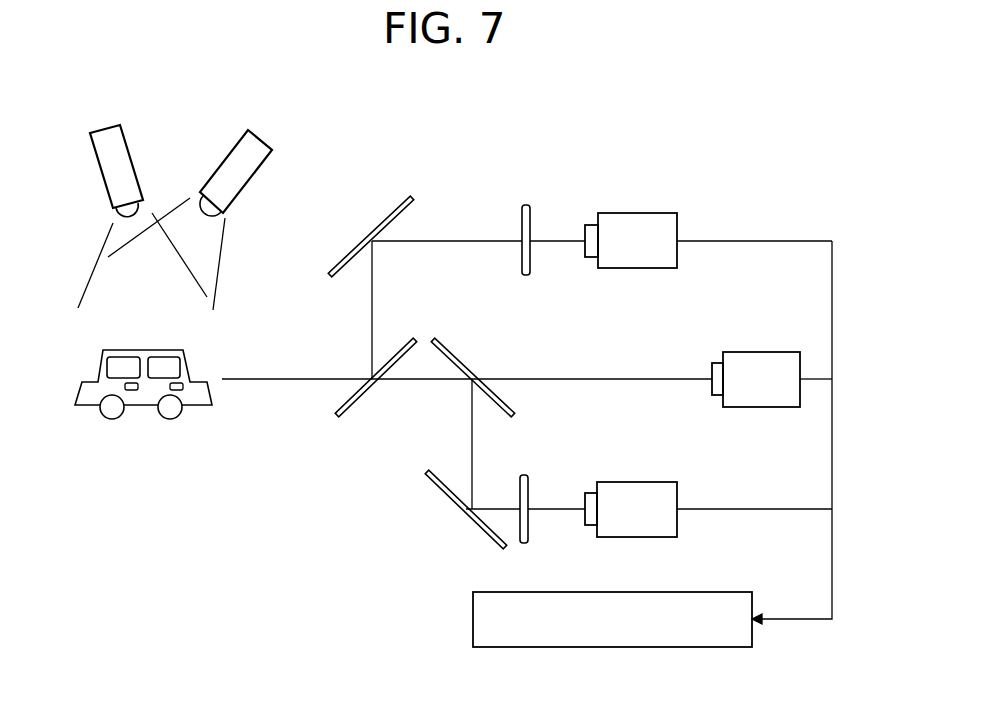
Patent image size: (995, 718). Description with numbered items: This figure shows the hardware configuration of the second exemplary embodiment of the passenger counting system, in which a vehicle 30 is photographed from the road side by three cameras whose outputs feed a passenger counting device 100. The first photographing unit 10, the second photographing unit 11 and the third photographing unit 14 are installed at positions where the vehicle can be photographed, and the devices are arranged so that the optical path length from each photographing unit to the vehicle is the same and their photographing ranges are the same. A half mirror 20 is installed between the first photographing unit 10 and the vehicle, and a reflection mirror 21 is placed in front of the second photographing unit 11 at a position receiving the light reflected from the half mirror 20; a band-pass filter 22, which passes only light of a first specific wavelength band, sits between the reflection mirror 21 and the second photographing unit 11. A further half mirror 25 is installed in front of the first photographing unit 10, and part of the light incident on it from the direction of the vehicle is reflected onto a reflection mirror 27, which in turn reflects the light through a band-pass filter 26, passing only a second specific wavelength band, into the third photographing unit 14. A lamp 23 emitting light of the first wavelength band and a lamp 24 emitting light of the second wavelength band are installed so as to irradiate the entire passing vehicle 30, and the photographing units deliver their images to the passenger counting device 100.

The first photographing unit 10 is at (777, 351).
The second photographing unit 11 is at (660, 213).
The third photographing unit 14 is at (658, 482).
The half mirror 20 is at (527, 205).
The reflection mirror 21 is at (407, 195).
The band-pass filter 22 is at (337, 418).
The lamp 23 is at (252, 133).
The lamp 24 is at (113, 123).
The half mirror 25 is at (452, 350).
The band-pass filter 26 is at (525, 475).
The reflection mirror 27 is at (438, 490).
The vehicle 30 is at (160, 416).
The passenger counting device 100 is at (473, 620).